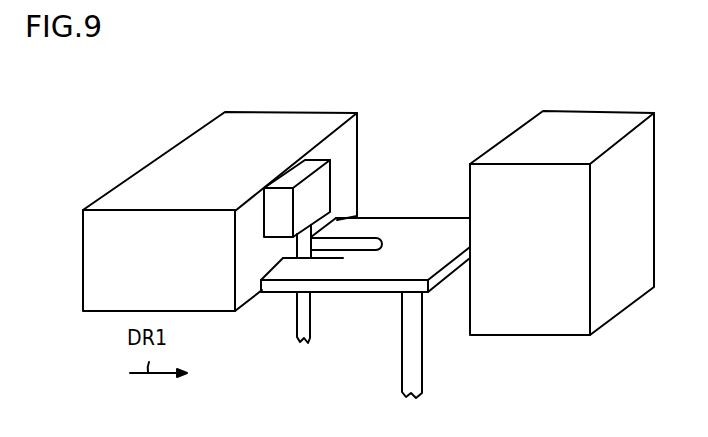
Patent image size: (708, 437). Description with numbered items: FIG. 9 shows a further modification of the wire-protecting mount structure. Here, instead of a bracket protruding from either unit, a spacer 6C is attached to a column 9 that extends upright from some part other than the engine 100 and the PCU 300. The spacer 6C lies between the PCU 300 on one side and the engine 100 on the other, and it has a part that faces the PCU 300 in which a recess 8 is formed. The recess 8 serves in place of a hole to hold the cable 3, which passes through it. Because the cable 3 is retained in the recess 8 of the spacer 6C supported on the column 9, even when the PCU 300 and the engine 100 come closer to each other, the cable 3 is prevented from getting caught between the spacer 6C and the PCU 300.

The PCU 300 is at (188, 125).
The engine 100 is at (597, 105).
The spacer 6C is at (417, 233).
The cable 3 is at (303, 313).
The recess 8 is at (340, 260).
The column 9 is at (412, 362).